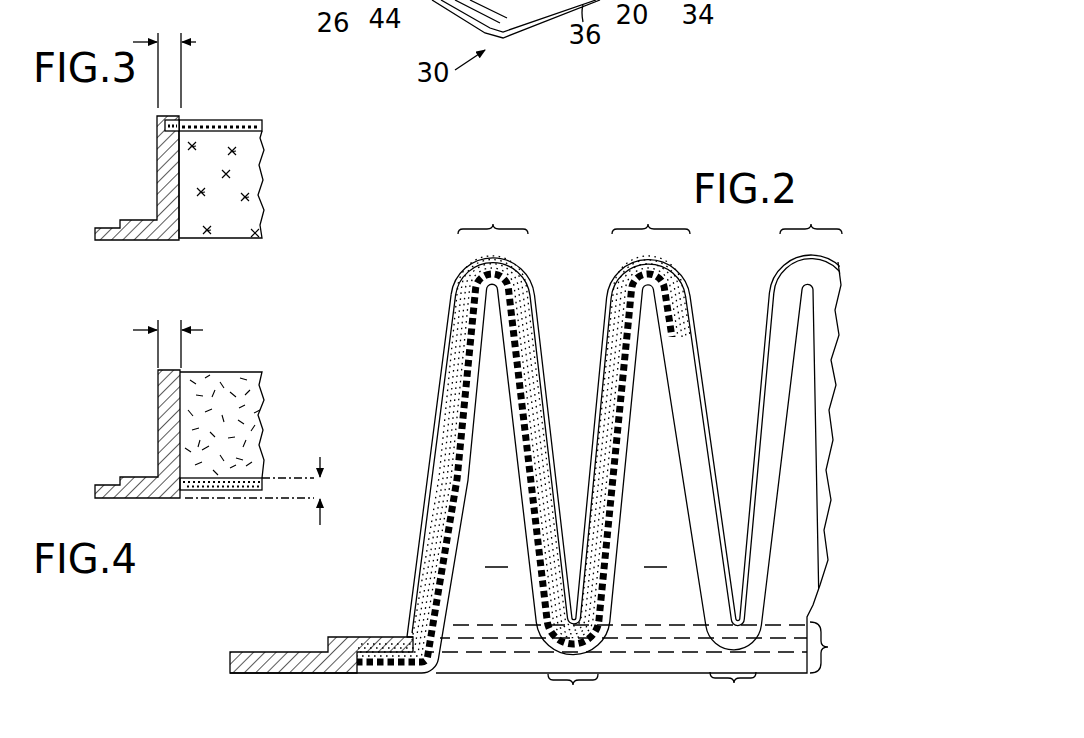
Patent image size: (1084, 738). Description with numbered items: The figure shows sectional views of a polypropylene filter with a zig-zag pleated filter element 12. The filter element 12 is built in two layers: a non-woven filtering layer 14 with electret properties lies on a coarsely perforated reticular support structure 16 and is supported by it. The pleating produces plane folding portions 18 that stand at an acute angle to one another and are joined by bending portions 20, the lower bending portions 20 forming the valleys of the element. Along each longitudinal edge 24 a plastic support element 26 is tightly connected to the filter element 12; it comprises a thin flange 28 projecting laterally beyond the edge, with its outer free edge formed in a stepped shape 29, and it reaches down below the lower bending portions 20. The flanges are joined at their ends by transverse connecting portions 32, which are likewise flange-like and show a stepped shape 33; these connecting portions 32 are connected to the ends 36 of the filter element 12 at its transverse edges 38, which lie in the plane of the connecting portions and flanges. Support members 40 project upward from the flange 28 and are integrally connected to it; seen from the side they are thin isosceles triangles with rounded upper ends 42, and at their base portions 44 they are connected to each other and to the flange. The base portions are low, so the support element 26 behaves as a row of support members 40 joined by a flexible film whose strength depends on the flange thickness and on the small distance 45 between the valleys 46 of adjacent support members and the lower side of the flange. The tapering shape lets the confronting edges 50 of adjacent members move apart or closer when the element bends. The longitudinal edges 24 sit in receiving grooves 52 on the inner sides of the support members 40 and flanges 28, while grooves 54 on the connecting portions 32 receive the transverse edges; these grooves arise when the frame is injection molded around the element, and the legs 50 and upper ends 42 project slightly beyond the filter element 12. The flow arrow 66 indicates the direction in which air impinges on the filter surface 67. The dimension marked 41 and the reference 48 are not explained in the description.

In FIG. 3, the filter element 12 is at (232, 110).
In FIG. 4, the filter element 12 is at (231, 369).
In FIG. 3, the non-woven filtering layer 14 is at (250, 120).
In FIG. 4, the non-woven filtering layer 14 is at (230, 424).
In FIG. 2, the non-woven filtering layer 14 is at (536, 336).
In FIG. 3, the reticular support structure 16 is at (250, 196).
In FIG. 4, the reticular support structure 16 is at (222, 489).
In FIG. 2, the reticular support structure 16 is at (513, 360).
In FIG. 2, the plane folding portions 18 is at (469, 444).
In FIG. 2, the bending portions 20 is at (650, 454).
In FIG. 3, the longitudinal edges 24 is at (185, 122).
In FIG. 4, the longitudinal edges 24 is at (187, 478).
In FIG. 3, the support elements 26 is at (127, 143).
In FIG. 4, the support elements 26 is at (137, 413).
In FIG. 3, the flange 28 is at (136, 241).
In FIG. 4, the flange 28 is at (138, 500).
In FIG. 2, the flange 28 is at (514, 665).
In FIG. 3, the stepped shape 29 is at (118, 222).
In FIG. 4, the stepped shape 29 is at (120, 475).
In FIG. 2, the connecting portions 32 is at (231, 663).
In FIG. 2, the stepped shape 33 is at (328, 642).
In FIG. 2, the ends 36 is at (430, 378).
In FIG. 2, the transverse edges 38 is at (382, 673).
In FIG. 3, the support members 40 is at (160, 180).
In FIG. 4, the support members 40 is at (160, 398).
In FIG. 2, the support members 40 is at (575, 553).
In FIG. 3, the thickness dimension 41 is at (168, 33).
In FIG. 4, the thickness dimension 41 is at (170, 323).
In FIG. 3, the upper ends 42 is at (170, 117).
In FIG. 4, the upper ends 42 is at (180, 367).
In FIG. 2, the upper ends 42 is at (507, 257).
In FIG. 3, the base portions 44 is at (162, 210).
In FIG. 4, the base portions 44 is at (160, 470).
In FIG. 2, the base portions 44 is at (500, 633).
In FIG. 4, the distance 45 is at (320, 489).
In FIG. 2, the distance 45 is at (646, 647).
In FIG. 2, the valleys 46 is at (573, 611).
In FIG. 3, the bottom surface 48 is at (150, 243).
In FIG. 4, the bottom surface 48 is at (140, 502).
In FIG. 2, the bottom surface 48 is at (650, 677).
In FIG. 2, the edges 50 is at (597, 401).
In FIG. 3, the receiving grooves 52 is at (163, 126).
In FIG. 4, the receiving grooves 52 is at (163, 497).
In FIG. 2, the receiving grooves 52 is at (780, 347).
In FIG. 2, the grooves 54 is at (377, 638).
In FIG. 2, the flow arrow 66 is at (592, 224).
In FIG. 2, the filter surface 67 is at (609, 301).